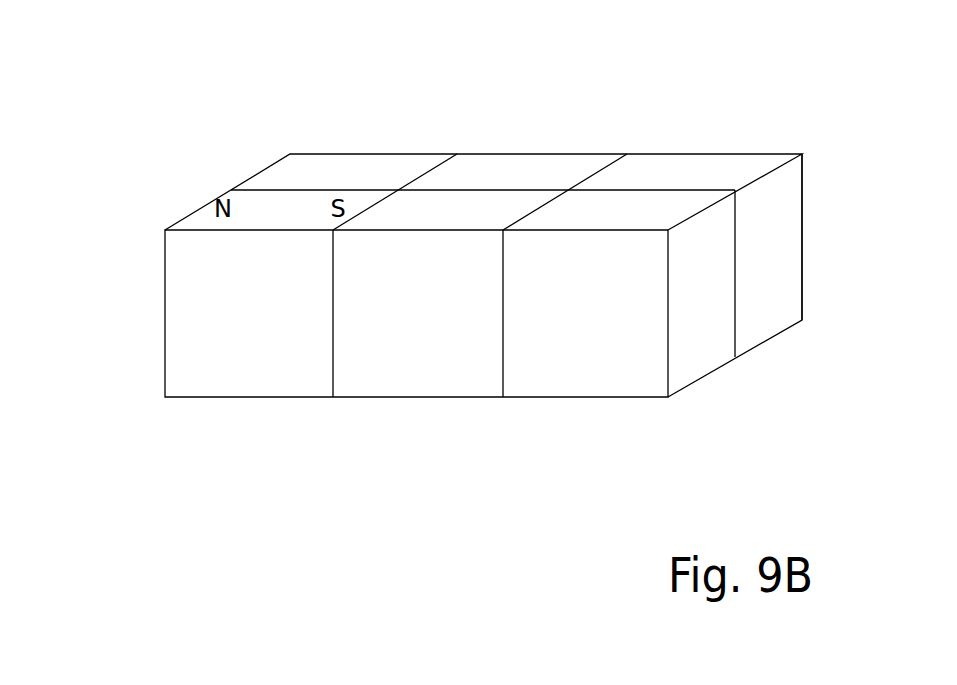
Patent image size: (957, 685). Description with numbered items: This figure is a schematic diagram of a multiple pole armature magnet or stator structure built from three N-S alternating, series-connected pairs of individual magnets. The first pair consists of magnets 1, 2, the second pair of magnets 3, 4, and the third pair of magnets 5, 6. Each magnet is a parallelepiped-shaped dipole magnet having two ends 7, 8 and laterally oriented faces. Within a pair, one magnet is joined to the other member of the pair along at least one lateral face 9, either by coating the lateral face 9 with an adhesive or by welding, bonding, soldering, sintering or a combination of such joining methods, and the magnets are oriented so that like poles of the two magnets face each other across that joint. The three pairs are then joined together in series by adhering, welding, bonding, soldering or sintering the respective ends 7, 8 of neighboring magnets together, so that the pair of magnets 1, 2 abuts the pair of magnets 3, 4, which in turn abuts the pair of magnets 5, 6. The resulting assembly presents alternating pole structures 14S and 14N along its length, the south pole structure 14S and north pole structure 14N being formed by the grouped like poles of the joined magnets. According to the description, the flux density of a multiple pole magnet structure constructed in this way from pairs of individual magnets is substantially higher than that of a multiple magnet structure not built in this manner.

The magnet 1 is at (468, 265).
The magnet 2 is at (311, 128).
The magnet 3 is at (530, 125).
The magnet 4 is at (463, 146).
The magnet 5 is at (705, 140).
The magnet 6 is at (619, 134).
The end 7 is at (480, 337).
The end 8 is at (838, 295).
The lateral face 9 is at (486, 95).
The pole structure 14N is at (345, 391).
The pole structure 14S is at (450, 392).